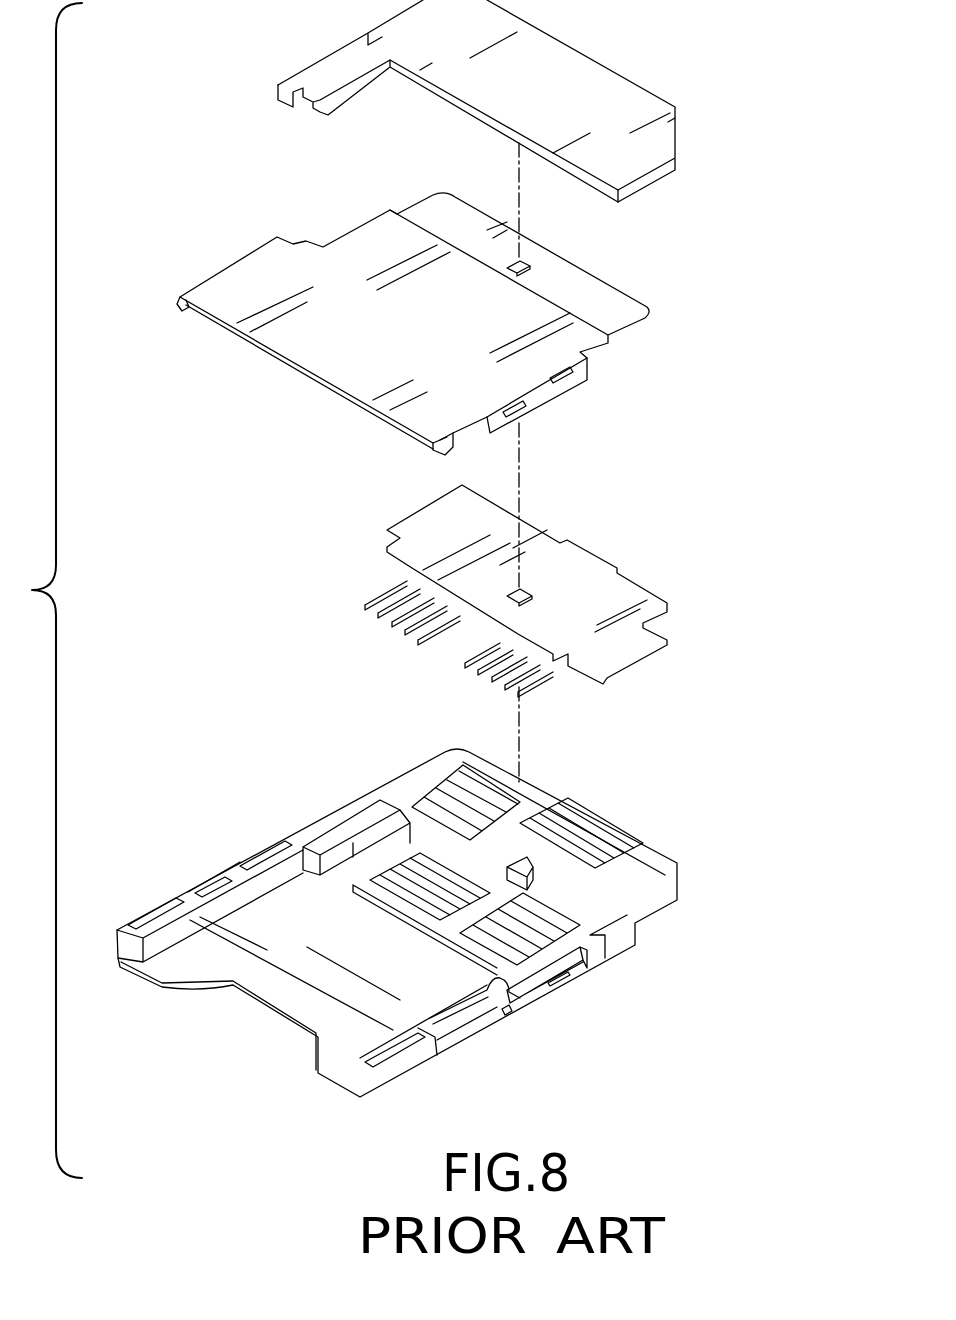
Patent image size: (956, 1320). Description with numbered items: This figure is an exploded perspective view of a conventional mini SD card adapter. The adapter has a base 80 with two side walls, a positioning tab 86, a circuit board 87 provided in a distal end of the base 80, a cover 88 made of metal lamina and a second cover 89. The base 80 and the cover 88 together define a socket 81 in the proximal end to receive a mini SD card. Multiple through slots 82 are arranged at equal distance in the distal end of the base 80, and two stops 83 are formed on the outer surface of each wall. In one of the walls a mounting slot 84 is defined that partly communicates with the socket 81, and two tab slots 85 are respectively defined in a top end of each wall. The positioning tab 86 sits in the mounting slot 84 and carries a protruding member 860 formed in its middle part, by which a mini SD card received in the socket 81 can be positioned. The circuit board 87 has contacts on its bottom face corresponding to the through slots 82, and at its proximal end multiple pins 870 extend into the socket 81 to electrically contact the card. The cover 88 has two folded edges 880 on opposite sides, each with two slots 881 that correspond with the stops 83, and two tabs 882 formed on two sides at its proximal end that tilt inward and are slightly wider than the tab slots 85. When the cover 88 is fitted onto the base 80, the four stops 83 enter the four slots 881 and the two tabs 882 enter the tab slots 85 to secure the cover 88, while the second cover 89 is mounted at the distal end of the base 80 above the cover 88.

The base 80 is at (477, 1037).
The socket 81 is at (293, 1013).
The through slots 82 is at (603, 840).
The stops 83 is at (527, 1010).
The mounting slot 84 is at (517, 1013).
The tab slots 85 is at (197, 887).
The positioning tab 86 is at (543, 970).
The protruding member 860 is at (517, 993).
The circuit board 87 is at (583, 557).
The pins 870 is at (540, 673).
The cover 88 is at (608, 288).
The folded edges 880 is at (587, 380).
The slots 881 is at (562, 388).
The tabs 882 is at (180, 314).
The second cover 89 is at (568, 55).